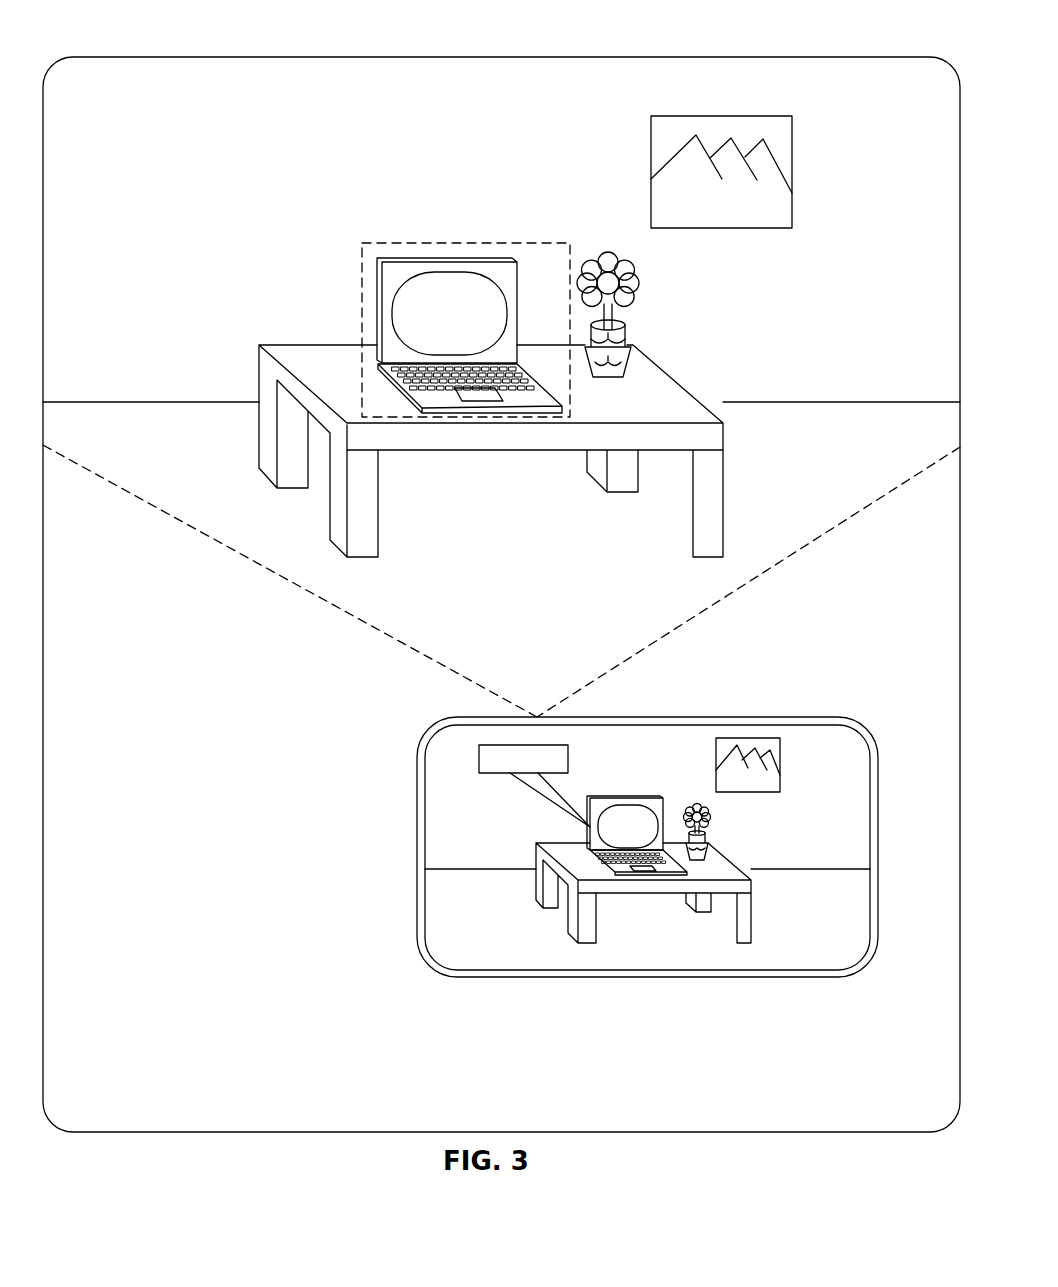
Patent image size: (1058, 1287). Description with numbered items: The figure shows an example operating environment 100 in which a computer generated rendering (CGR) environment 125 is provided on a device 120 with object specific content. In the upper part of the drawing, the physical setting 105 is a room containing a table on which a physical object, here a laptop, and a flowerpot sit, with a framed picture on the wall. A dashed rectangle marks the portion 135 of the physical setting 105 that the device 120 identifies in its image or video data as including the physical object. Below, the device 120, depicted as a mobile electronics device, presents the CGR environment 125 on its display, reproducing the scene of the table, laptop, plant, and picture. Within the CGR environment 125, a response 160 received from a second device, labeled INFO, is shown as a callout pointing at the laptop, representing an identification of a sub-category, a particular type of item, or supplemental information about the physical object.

The operating environment 100 is at (295, 45).
The physical setting 105 is at (107, 100).
The device 120 is at (417, 803).
The CGR environment 125 is at (466, 765).
The portion of the physical environment 135 is at (362, 266).
The response 160 is at (569, 754).